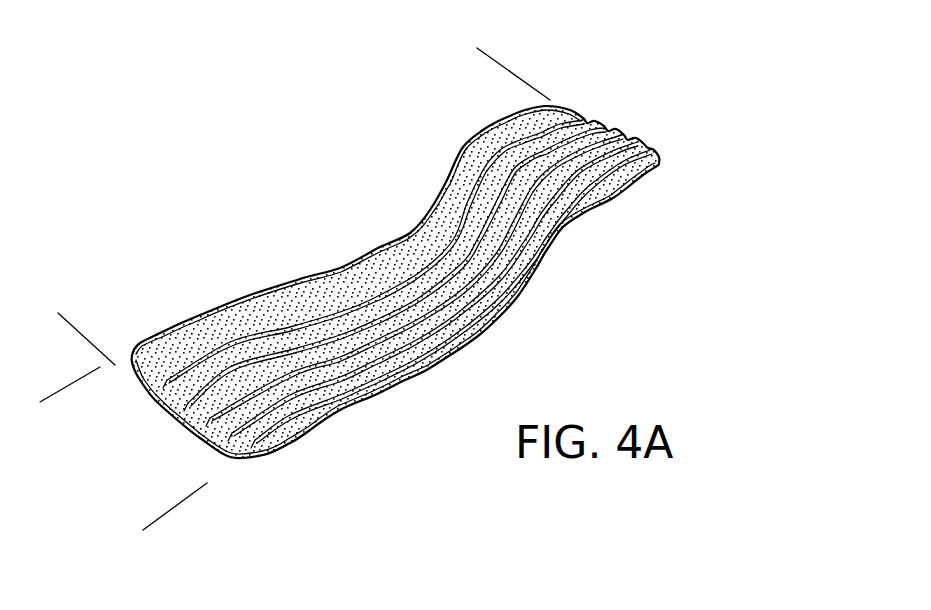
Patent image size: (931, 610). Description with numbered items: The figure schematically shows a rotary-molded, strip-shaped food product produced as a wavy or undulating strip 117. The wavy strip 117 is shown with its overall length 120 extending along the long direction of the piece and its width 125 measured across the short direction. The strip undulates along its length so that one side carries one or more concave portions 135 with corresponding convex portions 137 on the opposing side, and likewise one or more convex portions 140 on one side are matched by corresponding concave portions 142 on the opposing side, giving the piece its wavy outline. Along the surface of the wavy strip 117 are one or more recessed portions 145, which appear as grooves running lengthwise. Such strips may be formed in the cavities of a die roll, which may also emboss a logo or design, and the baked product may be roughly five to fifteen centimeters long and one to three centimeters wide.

The wavy strip 117 is at (602, 97).
The length 120 is at (503, 70).
The width 125 is at (187, 490).
The concave portions 135 is at (563, 222).
The convex portions 137 is at (477, 131).
The convex portions 140 is at (480, 338).
The concave portions 142 is at (382, 252).
The recessed portions 145 is at (655, 140).